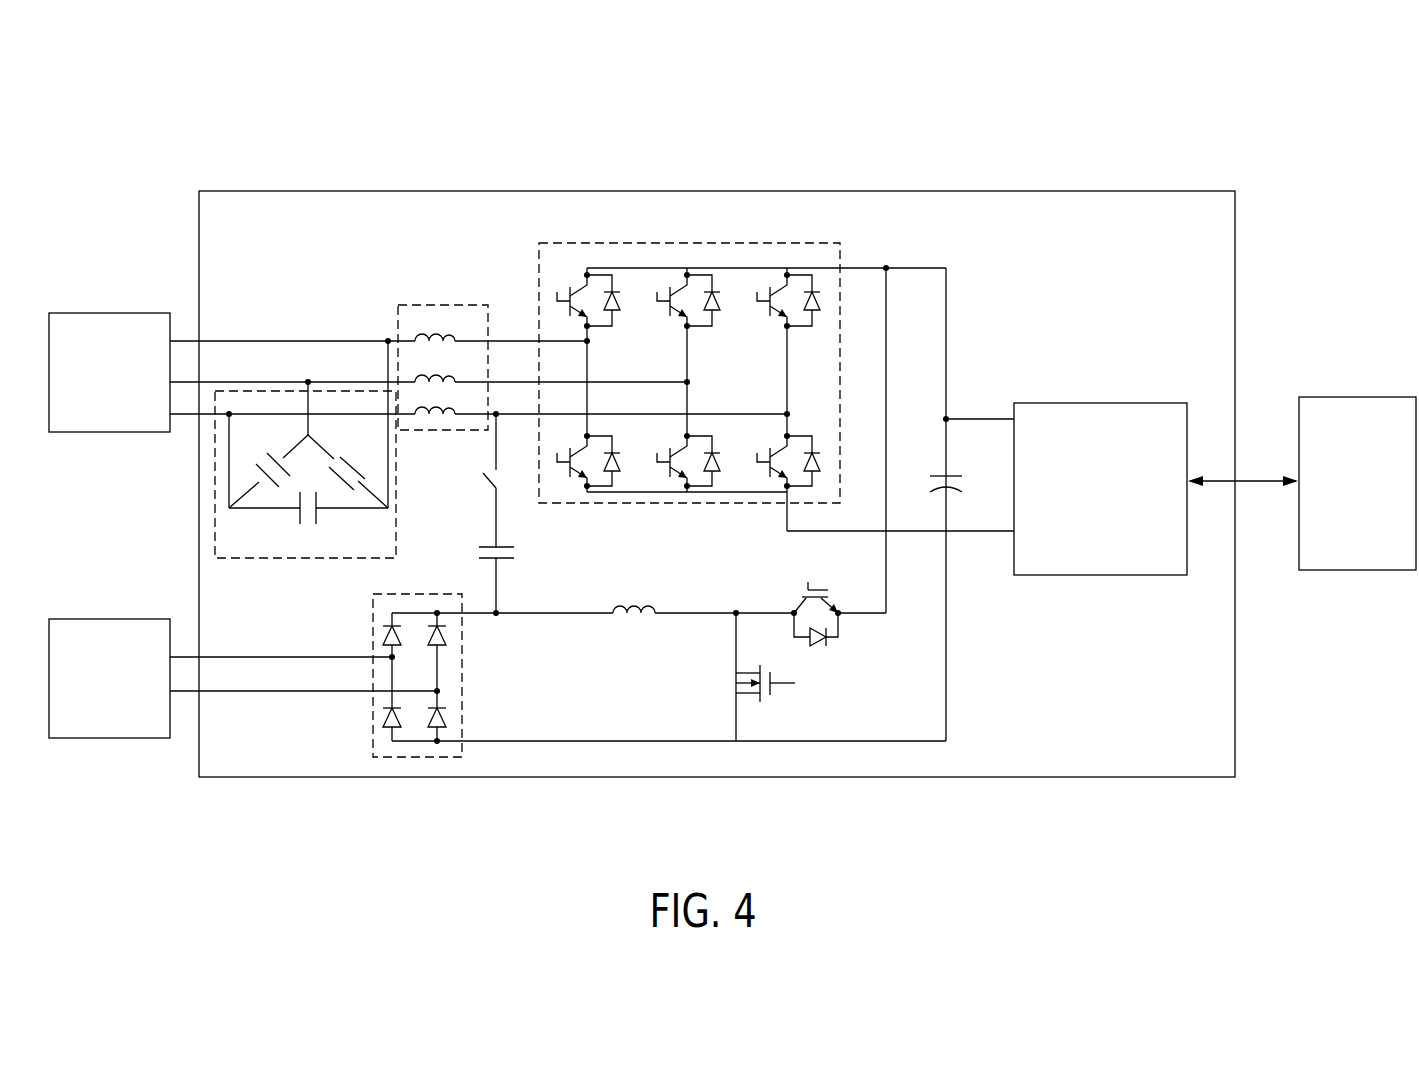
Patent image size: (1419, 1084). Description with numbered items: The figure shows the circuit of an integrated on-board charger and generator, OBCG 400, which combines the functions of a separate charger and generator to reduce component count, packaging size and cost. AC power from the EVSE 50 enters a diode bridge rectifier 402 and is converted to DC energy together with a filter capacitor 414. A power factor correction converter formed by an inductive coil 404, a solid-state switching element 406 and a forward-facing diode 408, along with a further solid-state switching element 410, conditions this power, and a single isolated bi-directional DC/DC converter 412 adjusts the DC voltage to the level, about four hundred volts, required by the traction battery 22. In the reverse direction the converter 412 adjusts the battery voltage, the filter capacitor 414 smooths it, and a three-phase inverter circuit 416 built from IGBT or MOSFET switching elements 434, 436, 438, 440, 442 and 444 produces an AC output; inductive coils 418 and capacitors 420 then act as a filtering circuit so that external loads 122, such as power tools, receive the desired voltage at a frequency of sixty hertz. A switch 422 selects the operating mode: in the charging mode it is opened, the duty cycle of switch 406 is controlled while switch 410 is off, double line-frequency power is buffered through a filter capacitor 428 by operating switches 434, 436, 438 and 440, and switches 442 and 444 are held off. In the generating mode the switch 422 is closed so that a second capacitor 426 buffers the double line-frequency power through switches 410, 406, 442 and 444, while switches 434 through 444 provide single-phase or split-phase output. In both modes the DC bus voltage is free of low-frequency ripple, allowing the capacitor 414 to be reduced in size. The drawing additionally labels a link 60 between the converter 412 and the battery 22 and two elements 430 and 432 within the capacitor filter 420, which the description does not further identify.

The integrated on-board charger and generator (OBCG) 400 is at (1215, 153).
The external loads 122 is at (90, 313).
The EVSE 50 is at (72, 619).
The traction battery 22 is at (1358, 397).
The bidirectional power link 60 is at (1250, 481).
The bi-directional DC/DC converter 412 is at (1087, 403).
The filter capacitor 414 is at (944, 473).
The three-phase inverter circuit 416 is at (725, 365).
The inductive coils 418 is at (446, 305).
The solid-state switching element 410 is at (836, 559).
The inductive coil 404 is at (618, 606).
The solid-state switching element 406 is at (772, 687).
The forward-facing diode 408 is at (828, 658).
The diode bridge rectifier 402 is at (465, 673).
The capacitors 420 is at (308, 456).
The switch 422 is at (492, 490).
The second capacitor 426 is at (503, 545).
The filter capacitor 428 is at (360, 468).
The capacitor C3 430 is at (255, 465).
The capacitor C5 432 is at (298, 516).
The switch S3 434 is at (597, 330).
The switch S4 436 is at (612, 438).
The switch S5 438 is at (697, 330).
The switch S6 440 is at (712, 438).
The switch S7 442 is at (800, 328).
The switch S8 444 is at (800, 437).